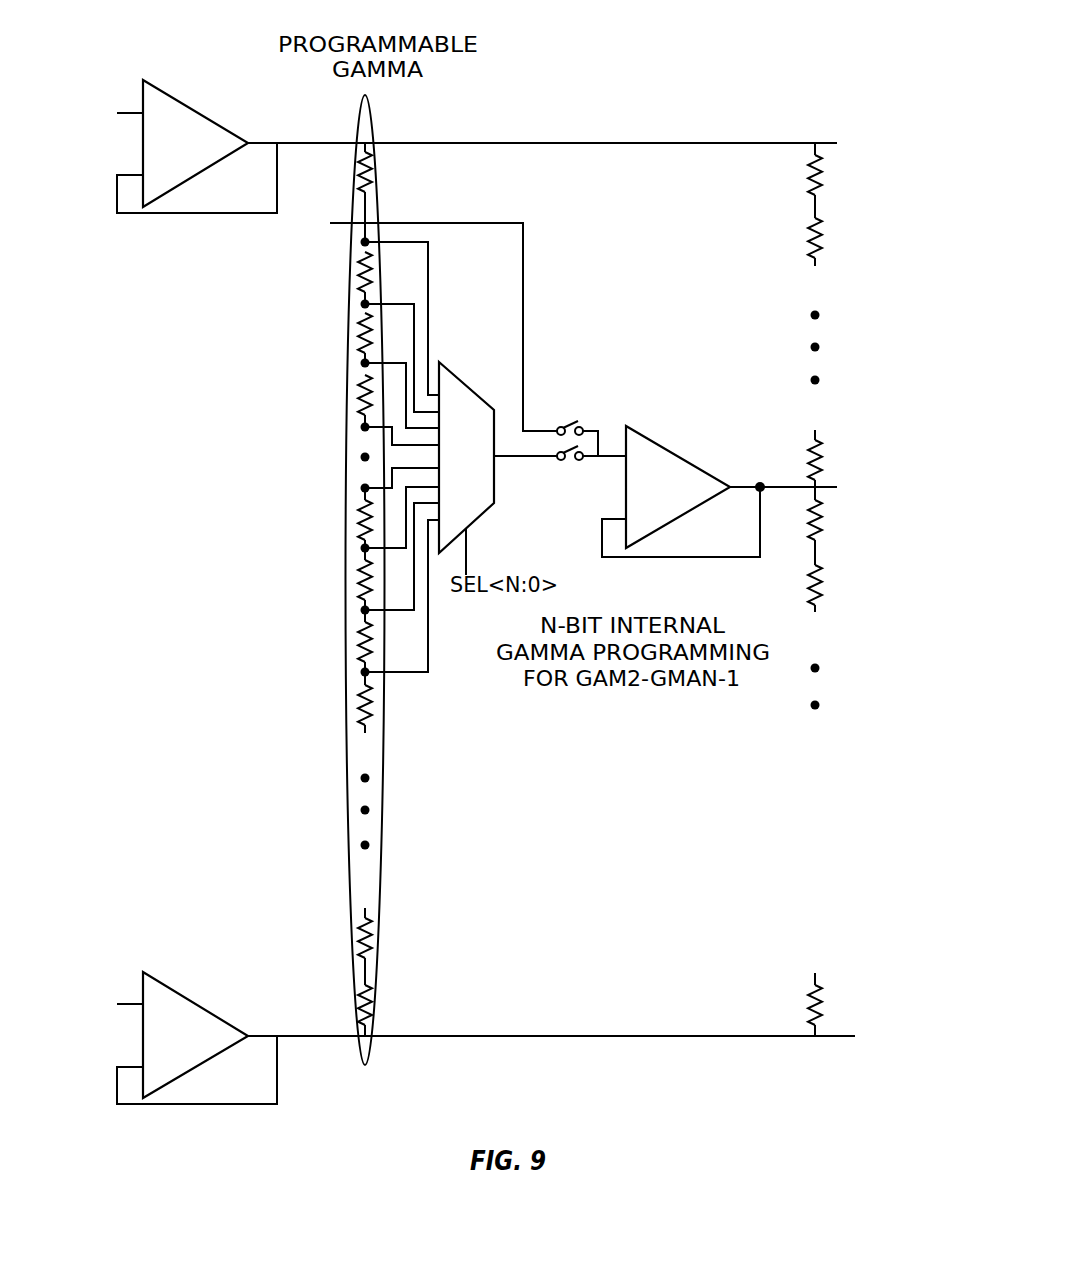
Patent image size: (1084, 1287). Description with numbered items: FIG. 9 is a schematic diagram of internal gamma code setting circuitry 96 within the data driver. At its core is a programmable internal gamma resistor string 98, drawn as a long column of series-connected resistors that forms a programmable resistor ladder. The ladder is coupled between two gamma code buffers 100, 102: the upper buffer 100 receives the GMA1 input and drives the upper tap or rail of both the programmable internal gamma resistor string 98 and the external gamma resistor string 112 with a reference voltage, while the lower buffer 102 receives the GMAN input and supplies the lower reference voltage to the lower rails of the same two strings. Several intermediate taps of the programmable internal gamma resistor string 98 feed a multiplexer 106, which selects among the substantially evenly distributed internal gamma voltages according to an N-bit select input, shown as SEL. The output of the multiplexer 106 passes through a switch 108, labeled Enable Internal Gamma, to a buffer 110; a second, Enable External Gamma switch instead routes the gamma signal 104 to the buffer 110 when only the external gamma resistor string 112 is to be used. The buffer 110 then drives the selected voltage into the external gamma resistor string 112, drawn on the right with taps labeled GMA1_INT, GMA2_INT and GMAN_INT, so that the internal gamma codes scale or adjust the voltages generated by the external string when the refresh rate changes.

The internal gamma code setting circuitry 96 is at (830, 41).
The programmable internal gamma resistor string 98 is at (345, 582).
The gamma code buffer 100 is at (195, 111).
The gamma code buffer 102 is at (195, 1003).
The gamma signal 104 is at (271, 255).
The multiplexer (MUX) 106 is at (469, 387).
The switch 108 is at (603, 333).
The buffer 110 is at (680, 458).
The external gamma resistor string 112 is at (842, 260).